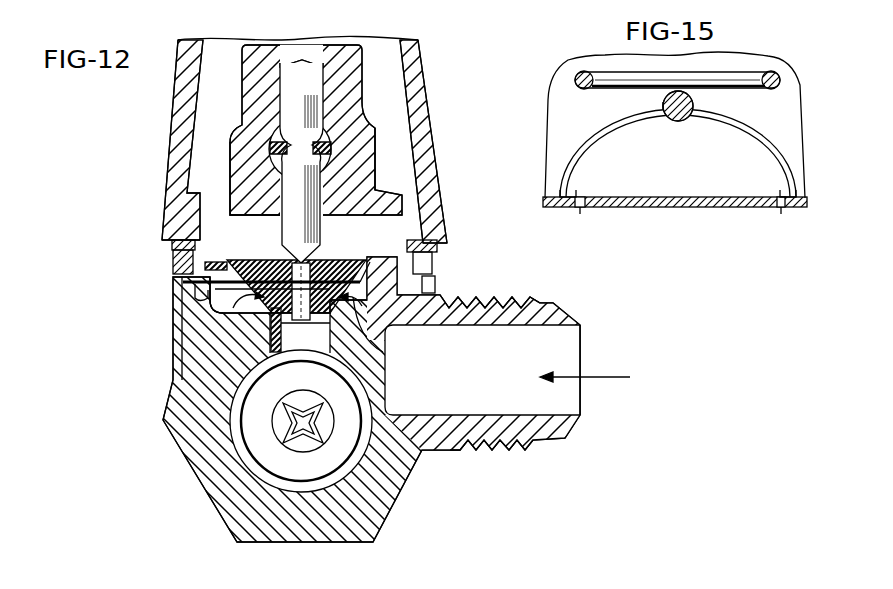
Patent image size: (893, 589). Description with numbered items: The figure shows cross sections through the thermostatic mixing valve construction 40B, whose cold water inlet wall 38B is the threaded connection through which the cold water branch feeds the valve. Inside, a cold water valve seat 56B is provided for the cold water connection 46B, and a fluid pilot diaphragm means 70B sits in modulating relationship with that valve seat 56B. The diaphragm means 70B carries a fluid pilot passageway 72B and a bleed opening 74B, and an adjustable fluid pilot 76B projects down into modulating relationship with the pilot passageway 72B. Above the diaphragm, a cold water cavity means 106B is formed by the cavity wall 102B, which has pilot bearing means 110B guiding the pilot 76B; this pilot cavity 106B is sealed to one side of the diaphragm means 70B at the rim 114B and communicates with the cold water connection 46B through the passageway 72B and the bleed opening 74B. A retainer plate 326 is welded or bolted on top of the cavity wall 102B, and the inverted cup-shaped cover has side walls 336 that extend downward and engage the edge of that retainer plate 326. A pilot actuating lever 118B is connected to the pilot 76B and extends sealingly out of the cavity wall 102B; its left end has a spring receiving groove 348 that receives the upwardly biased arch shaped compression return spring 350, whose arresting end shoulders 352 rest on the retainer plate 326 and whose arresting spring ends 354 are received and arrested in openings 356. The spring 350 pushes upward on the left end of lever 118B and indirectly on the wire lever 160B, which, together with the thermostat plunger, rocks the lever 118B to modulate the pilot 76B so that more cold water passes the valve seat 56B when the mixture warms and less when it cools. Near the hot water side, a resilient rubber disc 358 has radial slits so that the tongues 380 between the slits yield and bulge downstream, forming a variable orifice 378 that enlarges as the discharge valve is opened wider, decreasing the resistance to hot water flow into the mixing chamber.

In FIG. 12, the valve construction 40B is at (90, 264).
In FIG. 12, the cold water inlet wall 38B is at (481, 442).
In FIG. 12, the side walls of cover 336 is at (187, 52).
In FIG. 15, the side walls of cover 336 is at (740, 65).
In FIG. 12, the pilot bearing means 110B is at (248, 62).
In FIG. 12, the cold water cavity means 106B is at (243, 224).
In FIG. 12, the cold water cavity wall 102B is at (212, 216).
In FIG. 12, the fluid pilot diaphragm means 70B is at (245, 259).
In FIG. 12, the adjustable fluid pilot 76B is at (288, 100).
In FIG. 12, the fluid pilot passageway 72B is at (309, 280).
In FIG. 12, the bleed opening 74B is at (402, 208).
In FIG. 12, the retainer plate 326 is at (176, 246).
In FIG. 15, the retainer plate 326 is at (642, 208).
In FIG. 12, the rim 114B is at (203, 284).
In FIG. 12, the cold water valve seat 56B is at (267, 312).
In FIG. 12, the cold water connection 46B is at (287, 335).
In FIG. 12, the resilient rubber disc 358 is at (280, 421).
In FIG. 12, the variable orifice 378 is at (305, 443).
In FIG. 12, the tongues 380 is at (322, 421).
In FIG. 15, the wire lever 160B is at (602, 75).
In FIG. 15, the arch shaped compression return spring 350 is at (732, 126).
In FIG. 15, the arresting end shoulders 352 is at (572, 195).
In FIG. 15, the arresting spring ends 354 is at (597, 198).
In FIG. 15, the openings 356 is at (580, 214).
In FIG. 15, the spring receiving groove 348 is at (694, 106).
In FIG. 15, the pilot actuating lever 118B is at (663, 104).